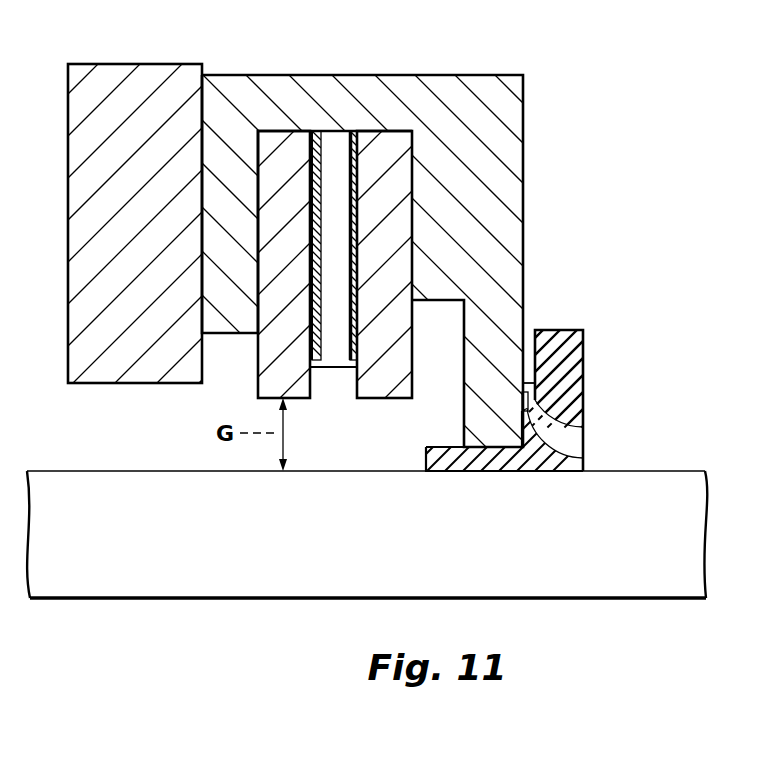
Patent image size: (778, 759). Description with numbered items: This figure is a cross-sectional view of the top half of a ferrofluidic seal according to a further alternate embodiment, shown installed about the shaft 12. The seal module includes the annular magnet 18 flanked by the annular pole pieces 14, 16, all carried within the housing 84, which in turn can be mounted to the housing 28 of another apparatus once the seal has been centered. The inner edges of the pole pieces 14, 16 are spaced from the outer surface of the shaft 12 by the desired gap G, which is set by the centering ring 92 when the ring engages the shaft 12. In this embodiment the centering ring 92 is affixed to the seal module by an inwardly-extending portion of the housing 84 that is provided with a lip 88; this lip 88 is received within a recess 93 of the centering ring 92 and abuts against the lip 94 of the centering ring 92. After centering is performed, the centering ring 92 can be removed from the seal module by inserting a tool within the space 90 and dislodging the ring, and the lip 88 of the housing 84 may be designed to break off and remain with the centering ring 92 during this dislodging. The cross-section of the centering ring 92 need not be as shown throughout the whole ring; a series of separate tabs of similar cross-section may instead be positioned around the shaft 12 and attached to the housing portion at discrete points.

The housing of another apparatus 28 is at (110, 72).
The housing 84 is at (514, 115).
The annular pole piece 16 is at (271, 203).
The annular magnet 18 is at (322, 251).
The annular pole piece 14 is at (409, 177).
The space 90 is at (530, 338).
The lip 88 is at (537, 392).
The centering ring 92 is at (572, 407).
The recess 93 is at (573, 427).
The lip 94 is at (584, 456).
The shaft 12 is at (117, 589).